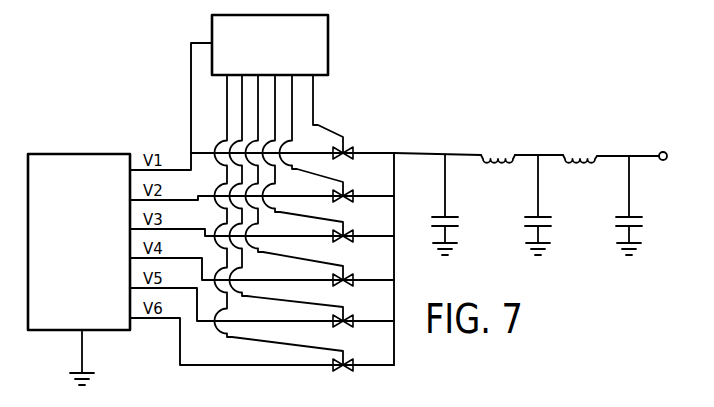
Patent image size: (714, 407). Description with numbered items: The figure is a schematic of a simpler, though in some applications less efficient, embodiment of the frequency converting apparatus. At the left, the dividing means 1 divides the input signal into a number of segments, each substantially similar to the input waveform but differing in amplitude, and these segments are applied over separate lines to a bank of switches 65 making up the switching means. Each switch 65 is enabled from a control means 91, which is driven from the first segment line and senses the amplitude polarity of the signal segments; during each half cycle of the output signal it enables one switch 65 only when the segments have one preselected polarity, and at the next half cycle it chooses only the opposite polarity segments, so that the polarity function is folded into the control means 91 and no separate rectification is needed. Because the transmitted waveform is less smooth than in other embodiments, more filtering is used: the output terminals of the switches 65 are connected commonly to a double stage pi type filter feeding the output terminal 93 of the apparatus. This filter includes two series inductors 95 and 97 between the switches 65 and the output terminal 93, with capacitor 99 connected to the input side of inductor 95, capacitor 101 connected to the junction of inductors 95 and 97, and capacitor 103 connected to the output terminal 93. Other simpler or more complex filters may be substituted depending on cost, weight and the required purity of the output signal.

The dividing means 1 is at (58, 154).
The control means 91 is at (329, 47).
The switch 65 is at (349, 148).
The inductor 95 is at (484, 153).
The inductor 97 is at (567, 153).
The capacitor 99 is at (456, 224).
The capacitor 101 is at (547, 224).
The capacitor 103 is at (638, 224).
The output terminal 93 is at (665, 151).